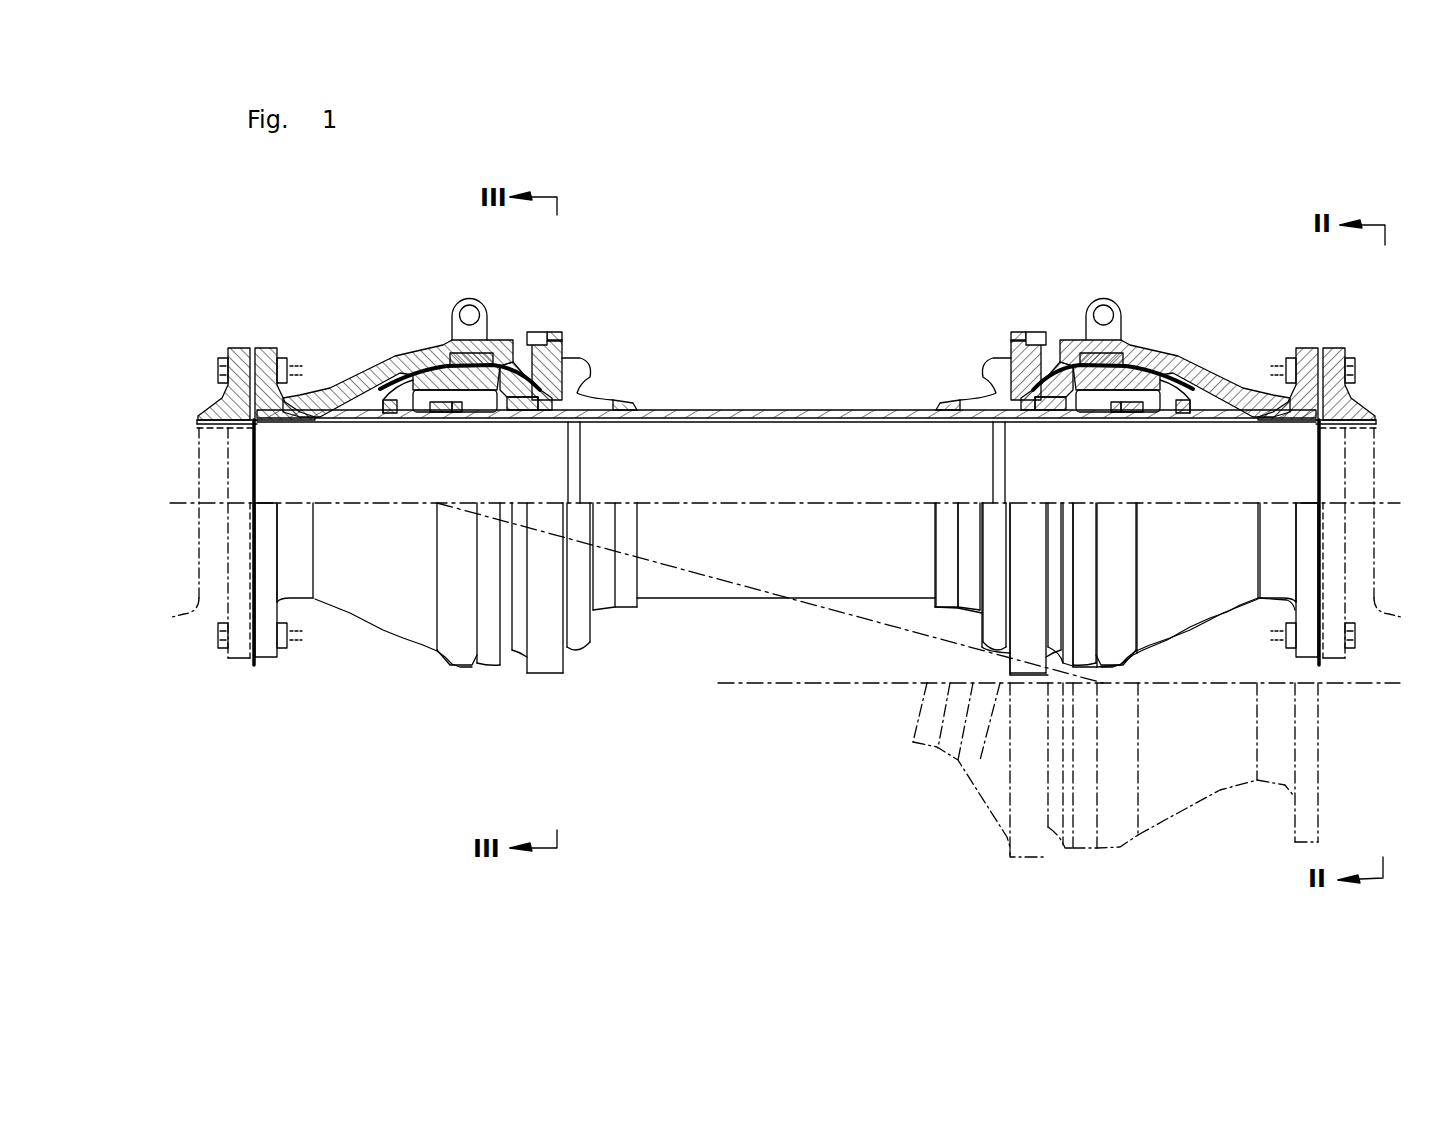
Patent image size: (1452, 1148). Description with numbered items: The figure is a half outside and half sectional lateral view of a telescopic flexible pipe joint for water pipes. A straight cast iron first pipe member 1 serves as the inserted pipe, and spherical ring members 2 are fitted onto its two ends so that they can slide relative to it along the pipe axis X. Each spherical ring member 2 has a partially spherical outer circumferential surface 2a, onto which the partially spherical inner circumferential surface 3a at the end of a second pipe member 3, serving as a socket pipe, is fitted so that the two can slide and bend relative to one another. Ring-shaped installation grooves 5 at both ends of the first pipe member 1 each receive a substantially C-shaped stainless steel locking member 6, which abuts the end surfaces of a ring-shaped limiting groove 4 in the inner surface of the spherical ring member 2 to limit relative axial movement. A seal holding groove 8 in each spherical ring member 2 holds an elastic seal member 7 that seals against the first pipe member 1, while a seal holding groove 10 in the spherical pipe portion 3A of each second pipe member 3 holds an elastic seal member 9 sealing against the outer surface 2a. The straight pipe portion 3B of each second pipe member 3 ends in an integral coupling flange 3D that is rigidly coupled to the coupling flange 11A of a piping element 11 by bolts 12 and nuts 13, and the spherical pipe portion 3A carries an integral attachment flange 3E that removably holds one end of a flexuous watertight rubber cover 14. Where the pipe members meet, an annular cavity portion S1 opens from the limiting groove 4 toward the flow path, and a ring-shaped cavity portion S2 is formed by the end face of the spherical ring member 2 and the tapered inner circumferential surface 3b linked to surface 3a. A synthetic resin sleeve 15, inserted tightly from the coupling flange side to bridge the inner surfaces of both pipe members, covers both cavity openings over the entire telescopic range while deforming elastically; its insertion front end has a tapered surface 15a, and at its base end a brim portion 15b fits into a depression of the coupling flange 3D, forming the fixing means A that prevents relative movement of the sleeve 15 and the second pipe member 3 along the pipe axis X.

The first pipe member 1 is at (722, 409).
The spherical ring member 2 is at (507, 352).
The partially spherical outer circumferential surface 2a is at (410, 360).
The second pipe member 3 is at (473, 296).
The partially spherical inner circumferential surface 3a is at (373, 398).
The tapered inner circumferential surface 3b is at (322, 428).
The spherical pipe portion 3A is at (407, 627).
The straight pipe portion 3B is at (300, 594).
The coupling flange 3D is at (268, 346).
The attachment flange 3E is at (545, 334).
The limiting groove 4 is at (475, 425).
The installation groove 5 is at (447, 426).
The locking member 6 is at (428, 426).
The elastic seal member 7 is at (603, 386).
The seal holding groove 8 is at (518, 425).
The elastic seal member 9 is at (483, 332).
The seal holding groove 10 is at (455, 333).
The piping element 11 is at (192, 568).
The coupling flange 11A is at (241, 345).
The bolt 12 is at (222, 355).
The nut 13 is at (300, 358).
The cover 14 is at (594, 356).
The sleeve 15 is at (575, 447).
The tapered surface 15a is at (582, 481).
The brim portion 15b is at (245, 416).
The annular cavity portion S1 is at (396, 428).
The ring-shaped cavity portion S2 is at (362, 428).
The fixing means A is at (244, 434).
The pipe axis X is at (750, 592).